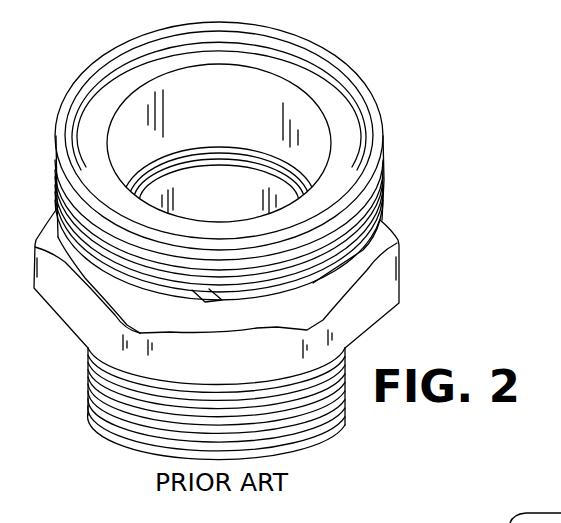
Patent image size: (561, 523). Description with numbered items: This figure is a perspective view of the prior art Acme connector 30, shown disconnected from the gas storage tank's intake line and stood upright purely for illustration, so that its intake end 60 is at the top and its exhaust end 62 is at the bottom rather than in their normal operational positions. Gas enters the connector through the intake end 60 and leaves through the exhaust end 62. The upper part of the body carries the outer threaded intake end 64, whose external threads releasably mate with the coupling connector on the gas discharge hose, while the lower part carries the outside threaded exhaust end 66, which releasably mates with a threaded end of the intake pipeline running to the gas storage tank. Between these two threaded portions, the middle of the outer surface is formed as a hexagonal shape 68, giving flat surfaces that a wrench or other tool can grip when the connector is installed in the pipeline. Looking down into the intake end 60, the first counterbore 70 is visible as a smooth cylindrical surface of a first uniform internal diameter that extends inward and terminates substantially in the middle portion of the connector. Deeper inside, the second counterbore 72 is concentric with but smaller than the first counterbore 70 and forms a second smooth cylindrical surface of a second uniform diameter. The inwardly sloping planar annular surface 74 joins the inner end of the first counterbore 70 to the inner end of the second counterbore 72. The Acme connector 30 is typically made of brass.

The Acme connector 30 is at (415, 131).
The intake end 60 is at (115, 50).
The exhaust end 62 is at (147, 449).
The outer threaded intake end 64 is at (384, 186).
The outside threaded exhaust end 66 is at (88, 362).
The hexagonal shape 68 is at (400, 268).
The first counterbore 70 is at (124, 117).
The second counterbore 72 is at (153, 195).
The inwardly sloping planar annular surface 74 is at (292, 172).